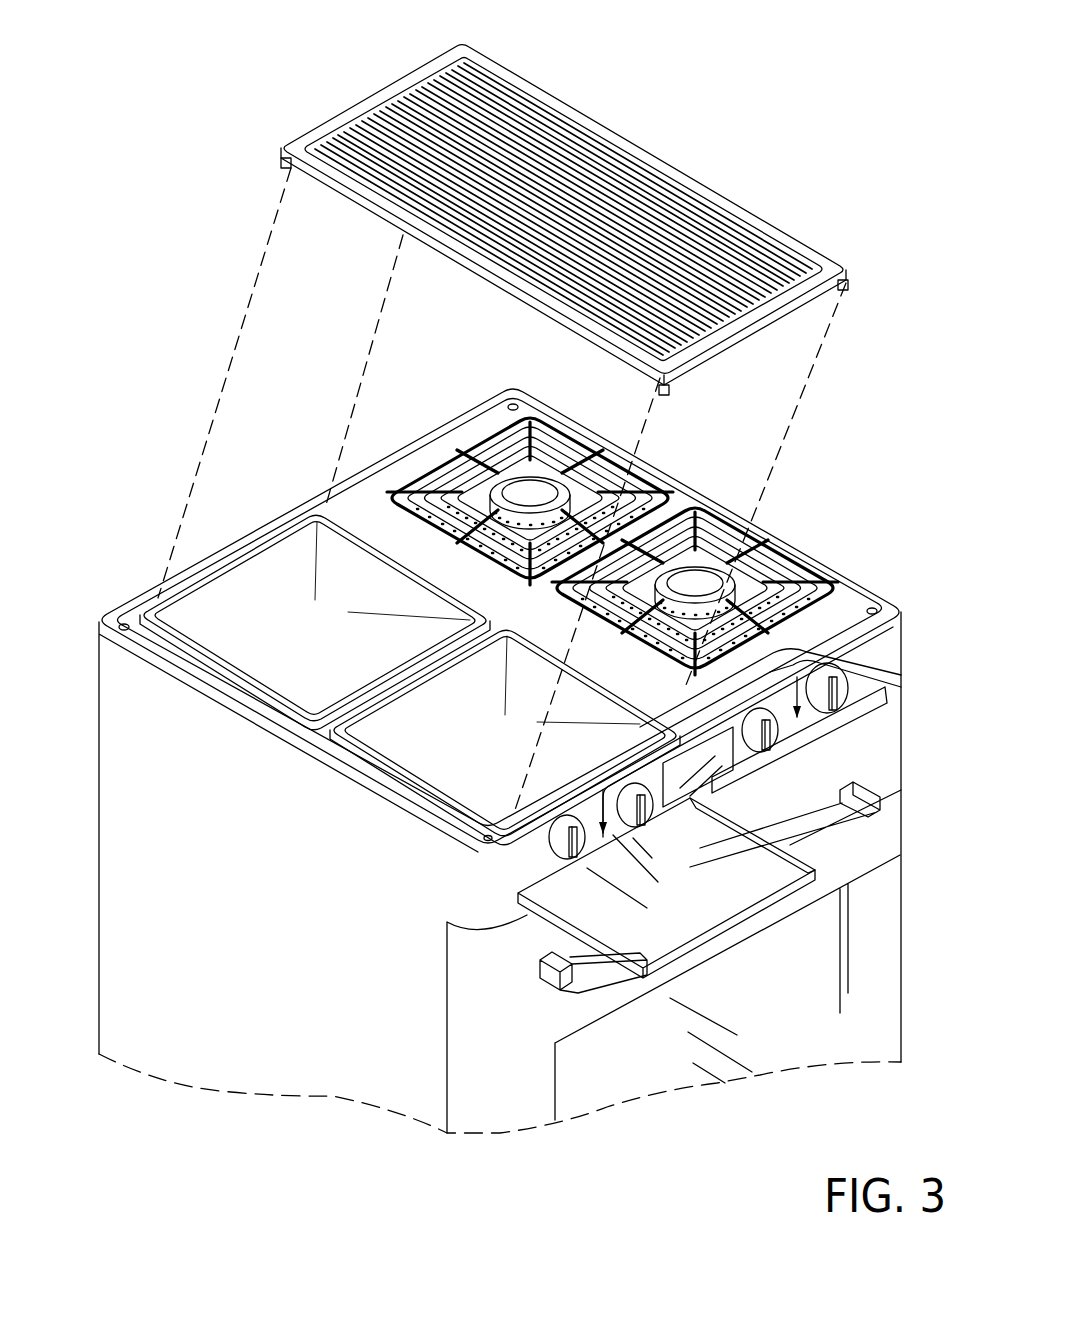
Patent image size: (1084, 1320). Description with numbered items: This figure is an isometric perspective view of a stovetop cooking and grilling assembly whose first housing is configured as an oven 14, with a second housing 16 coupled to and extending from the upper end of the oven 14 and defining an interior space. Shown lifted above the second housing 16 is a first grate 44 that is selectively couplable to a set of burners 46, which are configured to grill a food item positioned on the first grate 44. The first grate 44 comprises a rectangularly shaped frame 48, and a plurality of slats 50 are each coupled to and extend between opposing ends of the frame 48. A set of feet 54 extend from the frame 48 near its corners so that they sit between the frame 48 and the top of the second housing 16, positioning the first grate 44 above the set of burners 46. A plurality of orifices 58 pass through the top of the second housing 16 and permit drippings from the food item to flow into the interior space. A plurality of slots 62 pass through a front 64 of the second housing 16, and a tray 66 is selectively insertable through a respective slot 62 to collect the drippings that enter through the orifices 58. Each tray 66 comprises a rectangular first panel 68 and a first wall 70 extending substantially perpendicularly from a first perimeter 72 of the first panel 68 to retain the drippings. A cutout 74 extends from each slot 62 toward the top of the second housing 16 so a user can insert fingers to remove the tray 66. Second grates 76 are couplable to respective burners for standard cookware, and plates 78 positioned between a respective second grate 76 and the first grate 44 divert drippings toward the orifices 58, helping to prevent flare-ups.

The oven 14 is at (175, 928).
The second housing 16 is at (93, 657).
The first grate 44 is at (667, 150).
The set of burners 46 is at (470, 720).
The frame 48 is at (364, 101).
The slats 50 is at (768, 265).
The feet 54 is at (288, 169).
The orifices 58 is at (514, 395).
The slots 62 is at (828, 746).
The front 64 is at (880, 650).
The tray 66 is at (828, 847).
The first panel 68 is at (684, 902).
The first wall 70 is at (780, 918).
The first perimeter 72 is at (812, 897).
The cutout 74 is at (787, 672).
The second grate 76 is at (692, 482).
The plate 78 is at (386, 764).